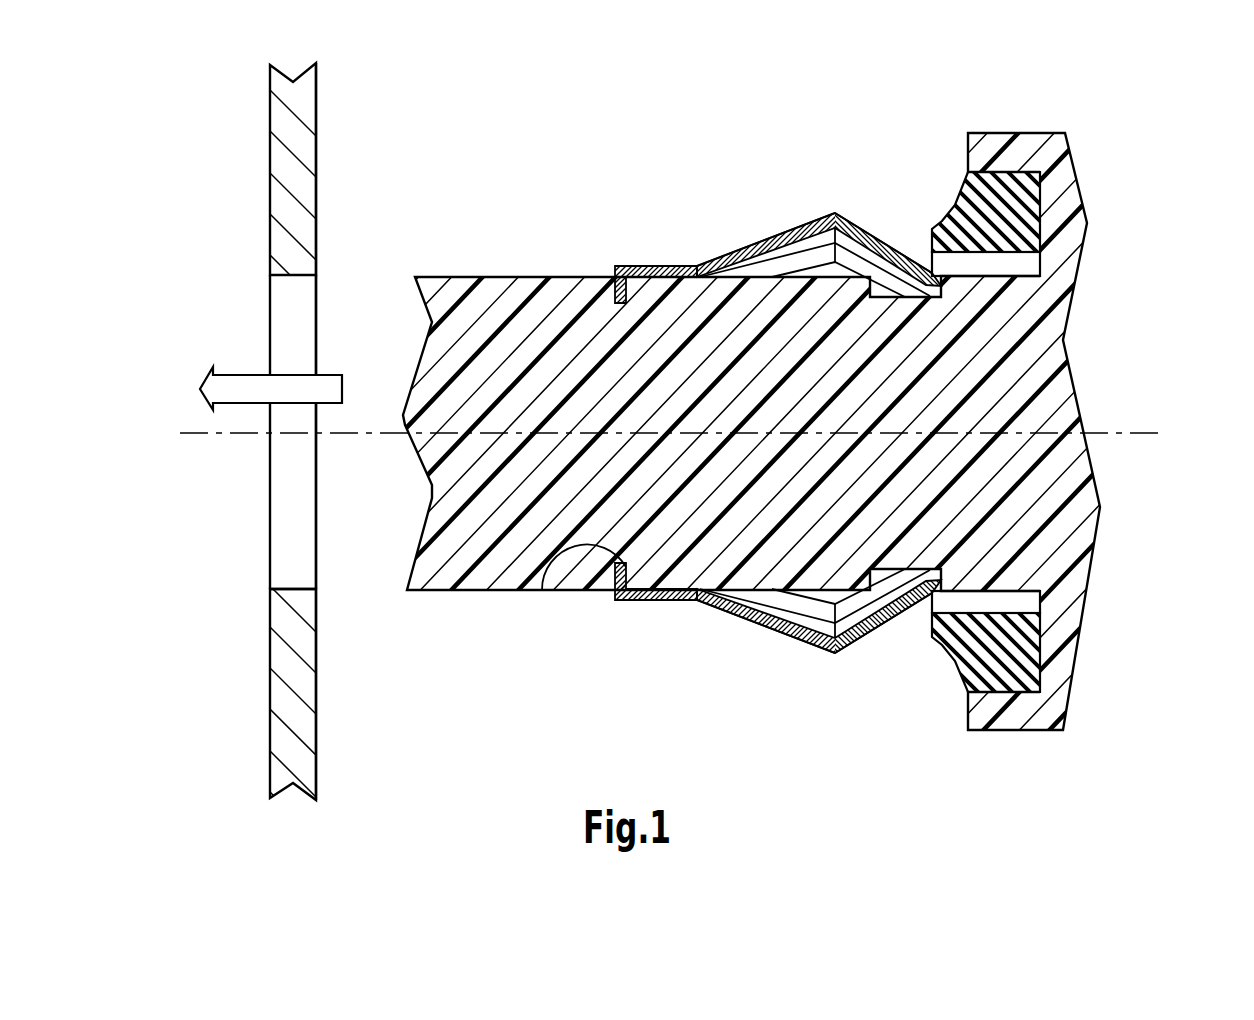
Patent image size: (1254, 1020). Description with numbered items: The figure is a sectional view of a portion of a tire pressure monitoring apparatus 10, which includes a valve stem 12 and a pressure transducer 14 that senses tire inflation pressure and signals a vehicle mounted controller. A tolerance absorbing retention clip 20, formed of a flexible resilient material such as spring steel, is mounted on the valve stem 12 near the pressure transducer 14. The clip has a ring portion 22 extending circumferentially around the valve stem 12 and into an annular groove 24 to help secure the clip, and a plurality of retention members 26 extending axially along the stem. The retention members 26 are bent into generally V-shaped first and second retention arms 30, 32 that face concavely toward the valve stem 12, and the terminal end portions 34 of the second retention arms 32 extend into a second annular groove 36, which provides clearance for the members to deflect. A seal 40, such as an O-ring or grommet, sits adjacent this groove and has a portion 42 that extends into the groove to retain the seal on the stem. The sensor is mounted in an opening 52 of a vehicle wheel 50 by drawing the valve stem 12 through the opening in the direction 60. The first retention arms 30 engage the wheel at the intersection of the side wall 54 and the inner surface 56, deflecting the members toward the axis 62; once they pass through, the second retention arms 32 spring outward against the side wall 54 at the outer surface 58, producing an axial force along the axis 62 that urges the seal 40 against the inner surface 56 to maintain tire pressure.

The tire pressure monitoring apparatus 10 is at (756, 104).
The valve stem 12 is at (552, 328).
The pressure transducer 14 is at (1066, 254).
The retention clip 20 is at (860, 230).
The ring portion 22 is at (619, 266).
The annular groove 24 is at (608, 532).
The retention members 26 is at (770, 233).
The first retention arms 30 is at (710, 263).
The second retention arms 32 is at (910, 268).
The terminal end portions 34 is at (933, 282).
The annular groove 36 is at (922, 578).
The seal 40 is at (997, 268).
The portion 42 is at (1000, 572).
The vehicle wheel 50 is at (290, 708).
The opening 52 is at (290, 477).
The side wall 54 is at (297, 588).
The inner surface 56 is at (326, 704).
The outer surface 58 is at (262, 218).
The direction 60 is at (254, 388).
The axis 62 is at (1125, 432).